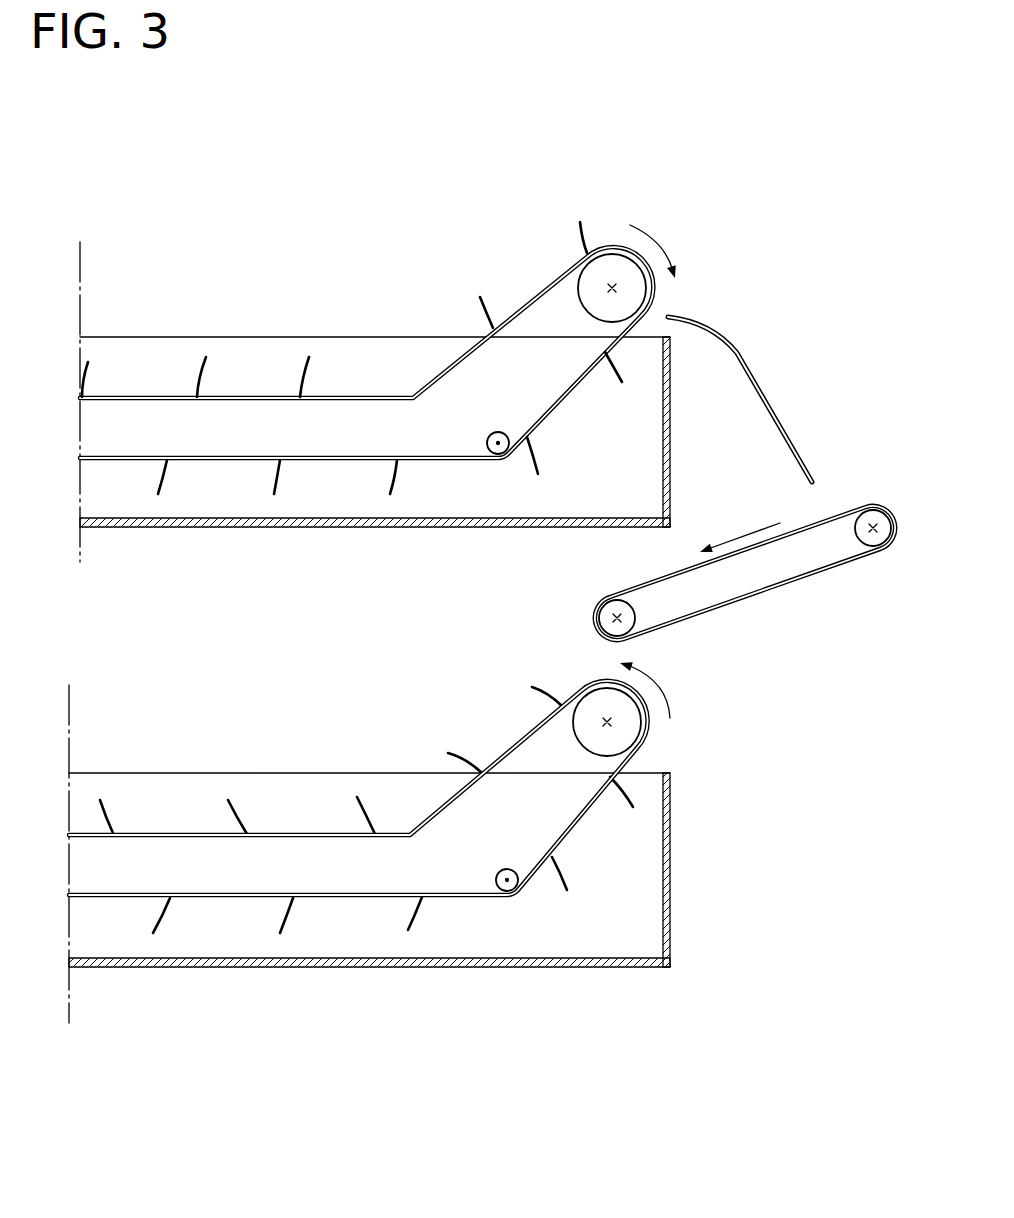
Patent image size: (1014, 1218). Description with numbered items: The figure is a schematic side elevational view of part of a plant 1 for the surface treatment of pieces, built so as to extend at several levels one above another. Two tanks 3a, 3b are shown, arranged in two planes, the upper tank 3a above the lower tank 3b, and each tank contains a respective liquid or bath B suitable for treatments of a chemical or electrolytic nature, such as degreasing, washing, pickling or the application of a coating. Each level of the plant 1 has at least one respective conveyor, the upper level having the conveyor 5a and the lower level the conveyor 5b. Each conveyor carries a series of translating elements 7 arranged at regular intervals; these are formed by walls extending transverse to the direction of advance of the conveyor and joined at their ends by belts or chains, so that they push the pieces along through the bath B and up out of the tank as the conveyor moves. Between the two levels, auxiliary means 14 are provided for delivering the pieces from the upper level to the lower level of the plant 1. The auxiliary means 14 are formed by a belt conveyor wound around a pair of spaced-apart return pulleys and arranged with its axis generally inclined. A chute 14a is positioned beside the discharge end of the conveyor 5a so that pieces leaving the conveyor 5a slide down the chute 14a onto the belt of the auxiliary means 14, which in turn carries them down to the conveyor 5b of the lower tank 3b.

The plant 1 is at (238, 224).
The tank 3a is at (670, 460).
The tank 3b is at (672, 906).
The conveyor 5a is at (143, 386).
The conveyor 5b is at (505, 742).
The translating elements 7 is at (203, 377).
The auxiliary means 14 is at (874, 484).
The chute 14a is at (747, 352).
The bath B is at (372, 355).